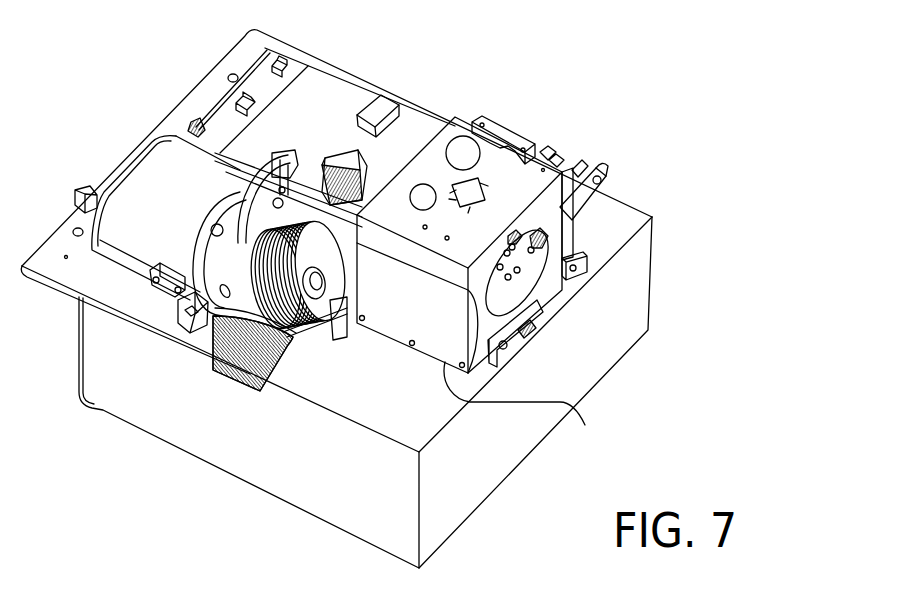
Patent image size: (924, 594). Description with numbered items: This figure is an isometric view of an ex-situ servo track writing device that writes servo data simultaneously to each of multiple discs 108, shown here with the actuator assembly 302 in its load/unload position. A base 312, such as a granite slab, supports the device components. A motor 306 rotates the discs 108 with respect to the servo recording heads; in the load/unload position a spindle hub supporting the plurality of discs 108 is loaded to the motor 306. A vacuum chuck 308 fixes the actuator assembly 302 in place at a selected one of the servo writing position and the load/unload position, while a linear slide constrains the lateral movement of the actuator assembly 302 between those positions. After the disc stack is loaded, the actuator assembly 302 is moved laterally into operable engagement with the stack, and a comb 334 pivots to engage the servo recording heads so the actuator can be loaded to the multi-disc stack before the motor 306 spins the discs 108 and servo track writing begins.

The discs 108 is at (303, 313).
The actuator assembly 302 is at (547, 400).
The motor 306 is at (143, 182).
The vacuum chuck 308 is at (362, 97).
The base 312 is at (253, 465).
The comb 334 is at (338, 157).